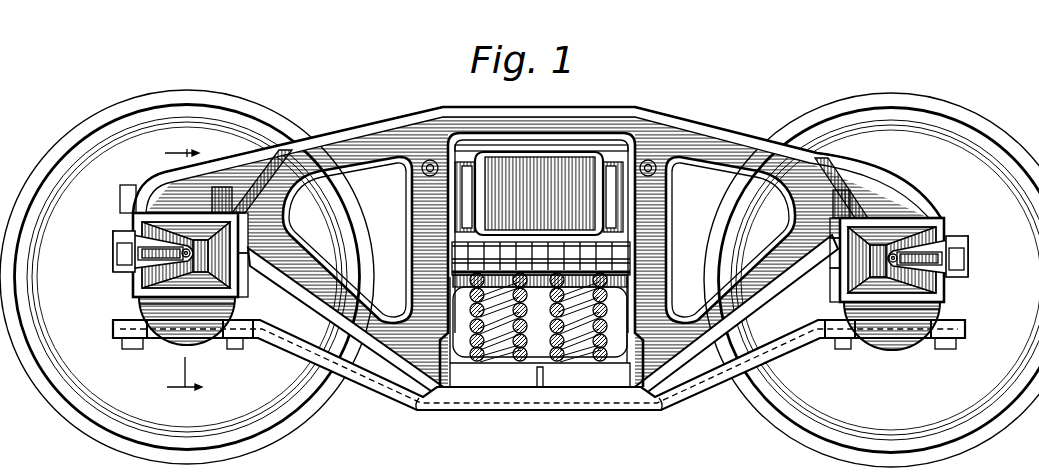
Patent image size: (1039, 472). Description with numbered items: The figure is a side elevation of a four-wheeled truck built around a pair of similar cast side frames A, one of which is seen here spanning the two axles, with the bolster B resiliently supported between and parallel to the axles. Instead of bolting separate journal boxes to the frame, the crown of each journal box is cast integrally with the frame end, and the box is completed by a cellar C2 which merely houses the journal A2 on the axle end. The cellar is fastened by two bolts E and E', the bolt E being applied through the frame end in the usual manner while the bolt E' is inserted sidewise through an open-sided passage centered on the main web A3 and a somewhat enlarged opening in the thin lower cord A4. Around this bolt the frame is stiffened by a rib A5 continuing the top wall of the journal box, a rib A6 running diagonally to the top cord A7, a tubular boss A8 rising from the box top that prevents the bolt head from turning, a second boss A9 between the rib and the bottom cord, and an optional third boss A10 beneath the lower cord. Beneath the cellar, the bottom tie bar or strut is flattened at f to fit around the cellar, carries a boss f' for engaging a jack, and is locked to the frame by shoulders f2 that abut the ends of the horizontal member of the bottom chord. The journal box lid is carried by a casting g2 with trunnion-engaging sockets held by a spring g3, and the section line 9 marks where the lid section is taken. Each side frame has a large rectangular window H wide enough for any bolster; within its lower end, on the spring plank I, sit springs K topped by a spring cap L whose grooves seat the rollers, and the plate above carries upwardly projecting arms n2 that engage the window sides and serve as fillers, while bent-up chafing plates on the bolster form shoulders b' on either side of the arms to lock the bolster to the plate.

The side frame A is at (627, 163).
The journal A2 is at (268, 220).
The main web A3 is at (543, 314).
The lower cord A4 is at (332, 249).
The rib A5 is at (275, 262).
The rib A6 is at (243, 195).
The top cord A7 is at (277, 157).
The tubular boss A8 is at (890, 157).
The second boss A9 is at (830, 237).
The third boss A10 is at (833, 268).
The bolster B is at (540, 193).
The shoulders b' is at (513, 151).
The cellar C2 is at (980, 307).
The bolt E is at (516, 352).
The bolt E' is at (539, 352).
The lower arch bar F' is at (539, 379).
The flattened end portion of strut f is at (535, 366).
The boss f' is at (537, 373).
The shoulders f2 is at (663, 418).
The journal box G is at (143, 277).
The casting g2 is at (997, 284).
The spring g3 is at (997, 261).
The window H is at (620, 237).
The spring plank I is at (590, 365).
The springs K is at (470, 333).
The spring cap L is at (557, 270).
The spring cap n is at (519, 247).
The arms n2 is at (702, 113).
The section line 9— 9 is at (183, 271).